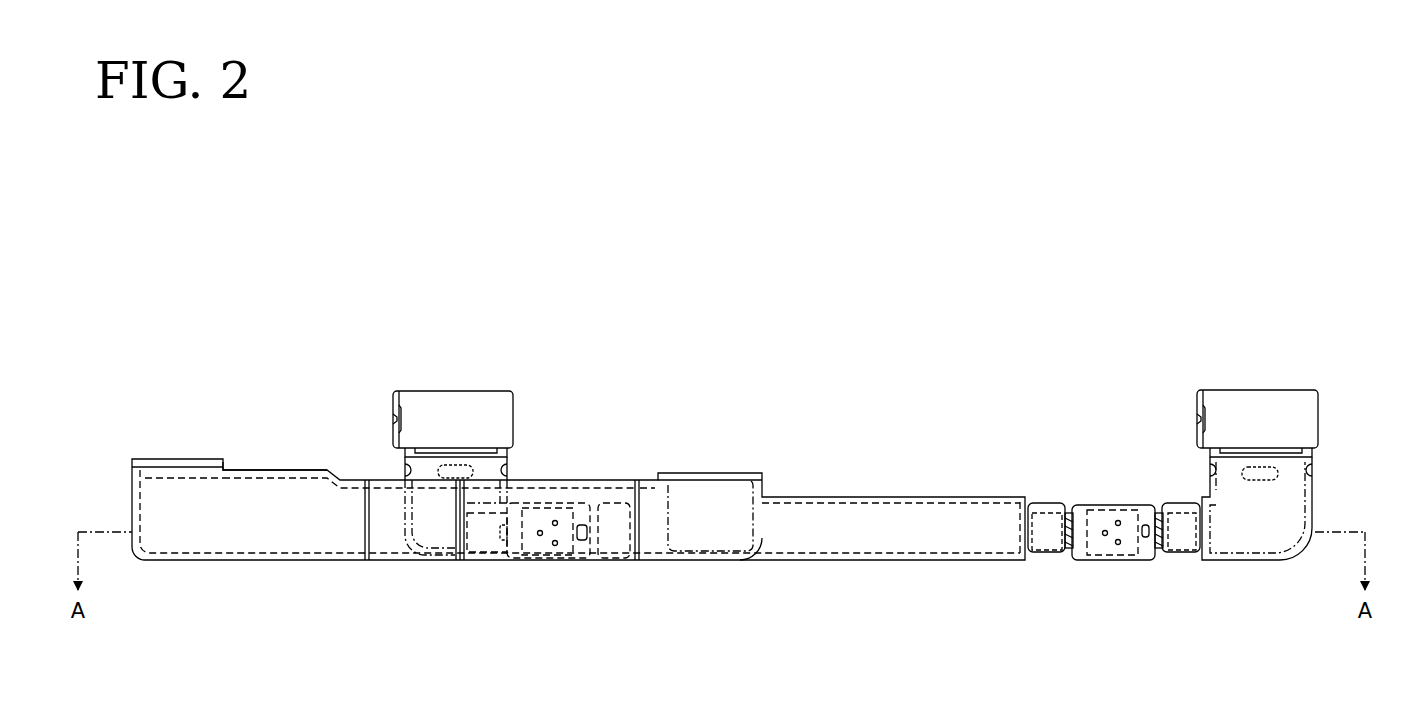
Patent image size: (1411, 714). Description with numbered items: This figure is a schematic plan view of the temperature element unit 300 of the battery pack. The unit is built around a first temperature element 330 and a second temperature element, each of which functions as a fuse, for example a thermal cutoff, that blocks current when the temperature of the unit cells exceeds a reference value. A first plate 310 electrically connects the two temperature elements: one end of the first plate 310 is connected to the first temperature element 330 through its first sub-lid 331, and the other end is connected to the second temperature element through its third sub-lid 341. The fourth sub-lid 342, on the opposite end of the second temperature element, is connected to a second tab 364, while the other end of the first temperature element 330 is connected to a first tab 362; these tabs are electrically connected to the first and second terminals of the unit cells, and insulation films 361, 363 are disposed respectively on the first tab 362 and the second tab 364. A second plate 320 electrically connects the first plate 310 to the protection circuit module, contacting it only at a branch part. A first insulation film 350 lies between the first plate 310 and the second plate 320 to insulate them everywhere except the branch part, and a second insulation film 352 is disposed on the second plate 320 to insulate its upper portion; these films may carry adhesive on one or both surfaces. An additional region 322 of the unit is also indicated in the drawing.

The temperature element unit 300 is at (1123, 315).
The first plate 310 is at (802, 500).
The second plate 320 is at (287, 480).
The circuit board 322 is at (484, 540).
The first temperature element 330 is at (545, 562).
The first sub-lid 331 is at (610, 540).
The third sub-lid 341 is at (1045, 543).
The fourth sub-lid 342 is at (1178, 540).
The first insulation film 350 is at (822, 494).
The second insulation film 352 is at (245, 470).
The insulation film 361 is at (505, 470).
The first tab 362 is at (458, 400).
The insulation film 363 is at (1315, 475).
The second tab 364 is at (1261, 405).